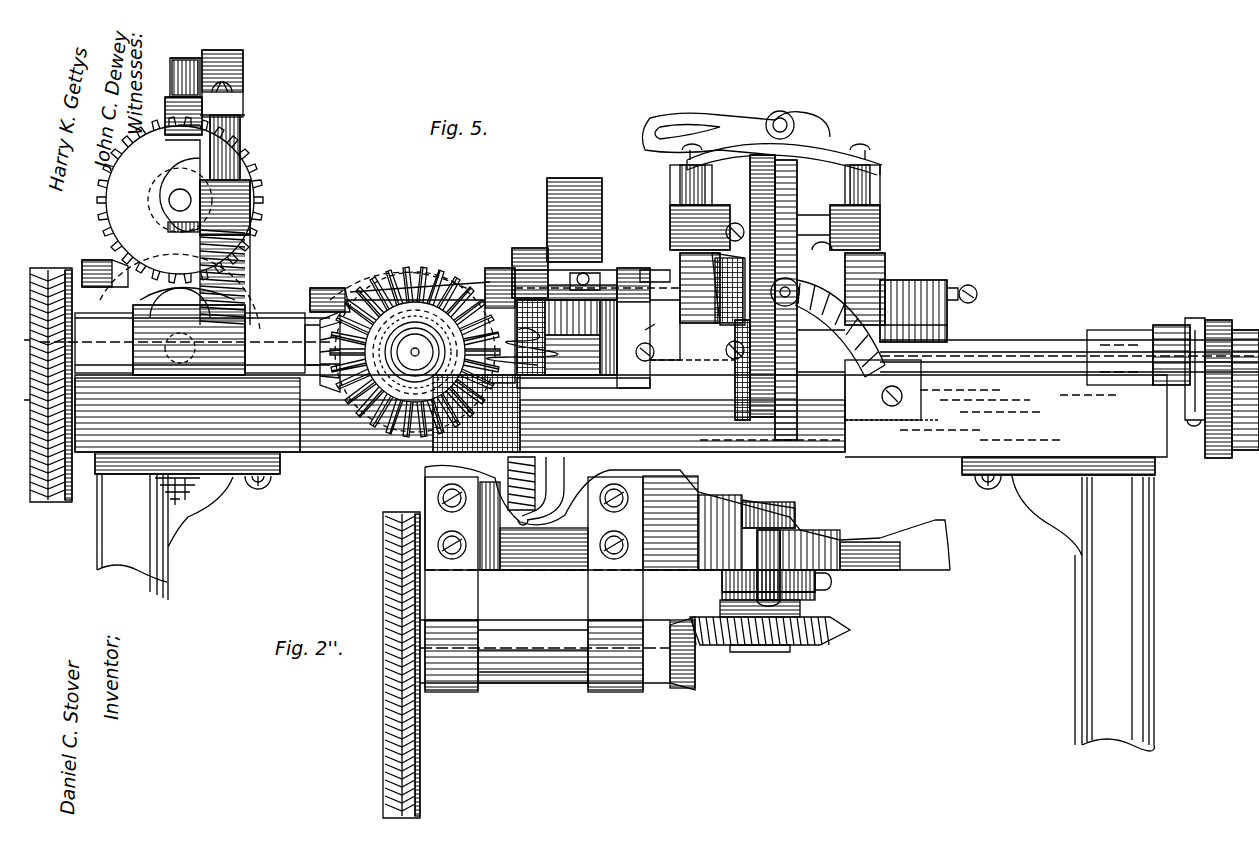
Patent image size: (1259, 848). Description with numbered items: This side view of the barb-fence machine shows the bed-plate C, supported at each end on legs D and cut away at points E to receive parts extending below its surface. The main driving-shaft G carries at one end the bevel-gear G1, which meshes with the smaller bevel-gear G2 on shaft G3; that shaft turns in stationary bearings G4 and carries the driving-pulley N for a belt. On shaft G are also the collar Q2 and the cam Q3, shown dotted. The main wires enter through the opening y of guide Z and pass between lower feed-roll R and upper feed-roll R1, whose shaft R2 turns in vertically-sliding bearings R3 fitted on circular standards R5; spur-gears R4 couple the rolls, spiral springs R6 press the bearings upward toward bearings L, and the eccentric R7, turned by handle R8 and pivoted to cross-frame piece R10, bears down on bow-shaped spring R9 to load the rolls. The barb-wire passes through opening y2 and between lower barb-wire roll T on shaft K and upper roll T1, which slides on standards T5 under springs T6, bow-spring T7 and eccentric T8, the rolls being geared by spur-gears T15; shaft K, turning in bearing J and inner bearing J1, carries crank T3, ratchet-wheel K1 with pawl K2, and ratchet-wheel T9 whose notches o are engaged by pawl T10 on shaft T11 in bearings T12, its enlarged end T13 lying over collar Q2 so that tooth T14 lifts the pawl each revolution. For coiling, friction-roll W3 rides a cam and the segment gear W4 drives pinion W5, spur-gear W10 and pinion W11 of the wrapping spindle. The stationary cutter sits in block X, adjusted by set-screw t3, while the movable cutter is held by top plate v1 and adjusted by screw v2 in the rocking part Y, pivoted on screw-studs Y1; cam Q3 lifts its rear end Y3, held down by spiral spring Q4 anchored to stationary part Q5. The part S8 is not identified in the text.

In FIG. 5, the driving-pulley N is at (48, 396).
In FIG. 2'', the driving-pulley N is at (383, 716).
In FIG. 5, the bed-plate C is at (621, 432).
In FIG. 2'', the bed-plate C is at (687, 517).
In FIG. 5, the frames or legs D is at (125, 530).
In FIG. 5, the main driving-shaft G is at (415, 352).
In FIG. 2'', the main driving-shaft G is at (796, 517).
In FIG. 5, the bevel-gear G1 is at (415, 272).
In FIG. 2'', the bevel-gear G1 is at (832, 636).
In FIG. 5, the smaller bevel-gear G2 is at (322, 363).
In FIG. 2'', the smaller bevel-gear G2 is at (696, 661).
In FIG. 5, the shaft G3 is at (225, 375).
In FIG. 2'', the shaft G3 is at (545, 651).
In FIG. 5, the stationary bearings G4 is at (190, 328).
In FIG. 2'', the stationary bearings G4 is at (534, 584).
In FIG. 2'', the collar Q2 is at (722, 592).
In FIG. 5, the cam Q3 is at (405, 420).
In FIG. 2'', the spiral spring Q4 is at (506, 466).
In FIG. 2'', the stationary part Q5 is at (564, 476).
In FIG. 5, the lower feed-roll R is at (180, 292).
In FIG. 5, the upper feed-roll R1 is at (118, 190).
In FIG. 5, the shaft of upper feed-rolls R2 is at (175, 200).
In FIG. 5, the vertically-sliding bearings R3 is at (245, 195).
In FIG. 5, the spur-gears R4 is at (246, 305).
In FIG. 5, the circular standards R5 is at (240, 135).
In FIG. 5, the spiral springs R6 is at (245, 262).
In FIG. 5, the eccentric R7 is at (176, 58).
In FIG. 5, the handle R8 is at (172, 78).
In FIG. 5, the bow-shaped spring R9 is at (168, 112).
In FIG. 5, the cross-frame piece R10 is at (245, 72).
In FIG. 5, the opening of guide Z y is at (188, 122).
In FIG. 5, the bearings for shaft M L is at (165, 330).
In FIG. 5, the guide Z is at (95, 262).
In FIG. 5, the angular rocking part Y is at (616, 197).
In FIG. 5, the pointed screw-studs Y1 is at (947, 325).
In FIG. 5, the rear end of rocking part Y3 is at (362, 290).
In FIG. 5, the friction-roll W3 is at (895, 295).
In FIG. 5, the segment spur-gear W4 is at (565, 195).
In FIG. 5, the pinion W5 is at (590, 370).
In FIG. 5, the spur-gear W10 is at (565, 372).
In FIG. 5, the pinion W11 is at (528, 260).
In FIG. 5, the angular stationary block X is at (567, 337).
In FIG. 5, the lower barb-wire feed-roll T is at (800, 405).
In FIG. 5, the upper barb-wire feed-roll T1 is at (797, 188).
In FIG. 5, the crank T3 is at (1215, 455).
In FIG. 5, the vertical standards T5 is at (870, 175).
In FIG. 5, the spiral springs T6 is at (883, 268).
In FIG. 5, the bow-spring T7 is at (815, 147).
In FIG. 5, the eccentric T8 is at (790, 122).
In FIG. 5, the ratchet-wheel T9 is at (636, 357).
In FIG. 5, the pawl T10 is at (660, 314).
In FIG. 5, the shaft T11 is at (625, 265).
In FIG. 5, the stationary bearings T12 is at (630, 268).
In FIG. 2'', the enlarged end T13 is at (775, 550).
In FIG. 2'', the cog or tooth T14 is at (830, 590).
In FIG. 5, the spur-gears T15 is at (755, 398).
In FIG. 5, the block S8 is at (828, 248).
In FIG. 5, the opening of guide Z3 y2 is at (828, 324).
In FIG. 5, the set-screw t3 is at (970, 286).
In FIG. 5, the bearing for shaft K J is at (1113, 320).
In FIG. 5, the inner bearing J1 is at (705, 365).
In FIG. 5, the shaft K is at (1018, 350).
In FIG. 5, the ratchet-wheel K1 is at (1190, 320).
In FIG. 5, the pawl K2 is at (1185, 390).
In FIG. 5, the cut-away points E is at (735, 457).
In FIG. 5, the notches o is at (644, 331).
In FIG. 5, the top plate v1 is at (655, 266).
In FIG. 5, the adjusting-screw v2 is at (578, 278).